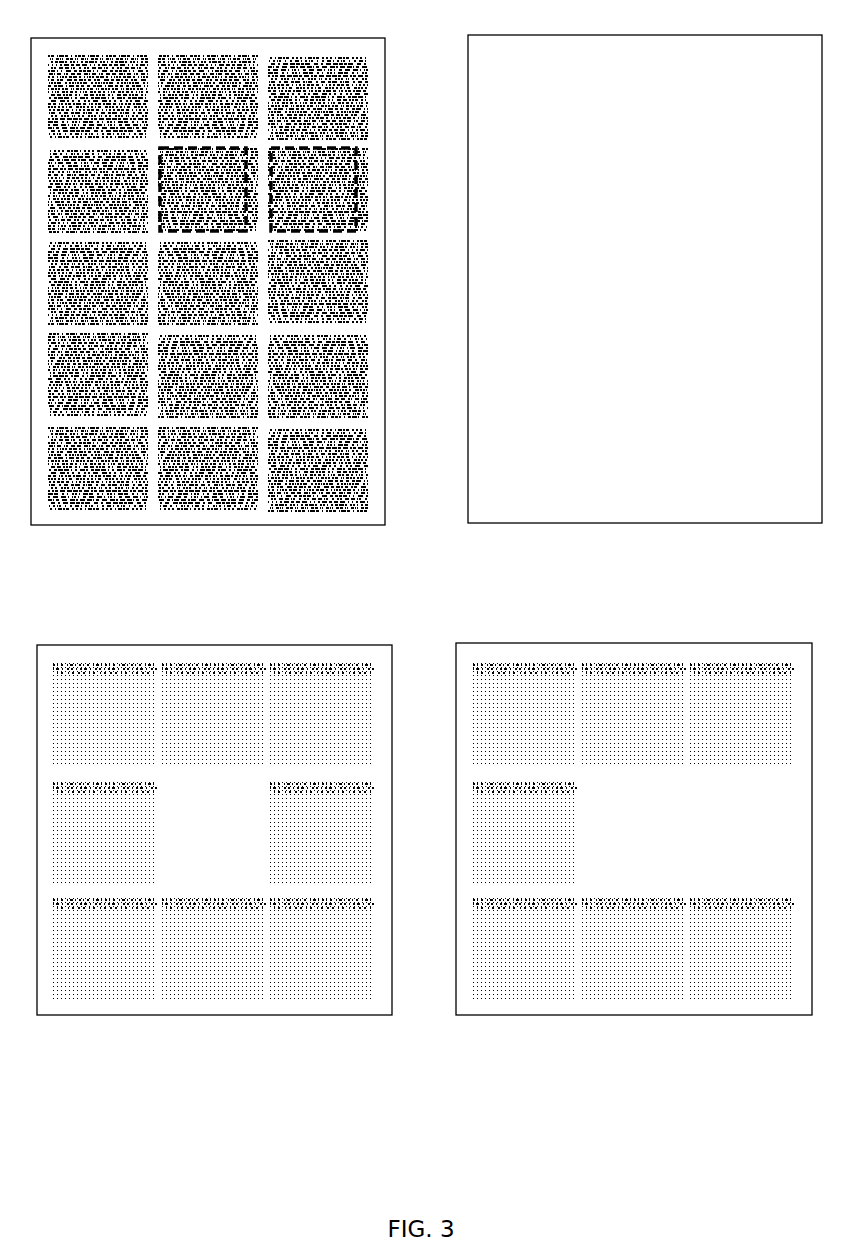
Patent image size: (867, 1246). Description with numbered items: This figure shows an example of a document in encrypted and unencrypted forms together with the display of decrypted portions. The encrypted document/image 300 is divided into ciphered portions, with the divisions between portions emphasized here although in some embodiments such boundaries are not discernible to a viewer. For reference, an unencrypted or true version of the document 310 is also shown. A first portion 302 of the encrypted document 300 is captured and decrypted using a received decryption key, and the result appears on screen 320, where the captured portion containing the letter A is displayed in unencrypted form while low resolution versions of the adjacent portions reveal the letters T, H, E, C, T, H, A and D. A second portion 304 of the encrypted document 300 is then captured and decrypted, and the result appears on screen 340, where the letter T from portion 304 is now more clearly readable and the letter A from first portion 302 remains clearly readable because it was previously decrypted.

The encrypted document/image 300 is at (180, 30).
The first portion 302 is at (207, 148).
The second portion 304 is at (368, 176).
The unencrypted version of the document 310 is at (615, 30).
The screen 320 is at (175, 632).
The screen 340 is at (612, 632).